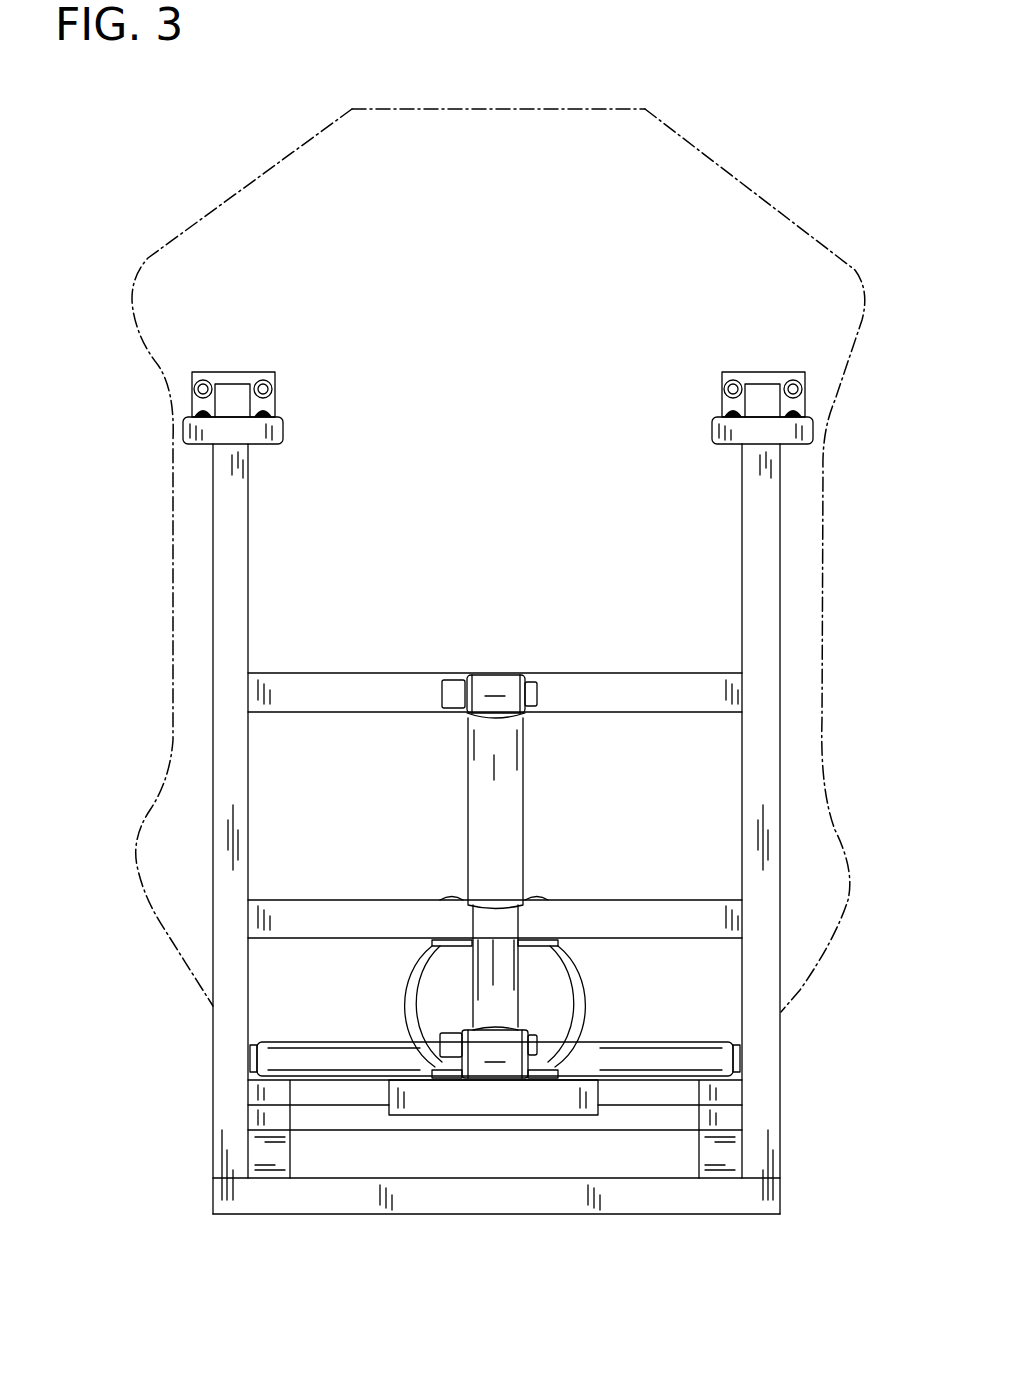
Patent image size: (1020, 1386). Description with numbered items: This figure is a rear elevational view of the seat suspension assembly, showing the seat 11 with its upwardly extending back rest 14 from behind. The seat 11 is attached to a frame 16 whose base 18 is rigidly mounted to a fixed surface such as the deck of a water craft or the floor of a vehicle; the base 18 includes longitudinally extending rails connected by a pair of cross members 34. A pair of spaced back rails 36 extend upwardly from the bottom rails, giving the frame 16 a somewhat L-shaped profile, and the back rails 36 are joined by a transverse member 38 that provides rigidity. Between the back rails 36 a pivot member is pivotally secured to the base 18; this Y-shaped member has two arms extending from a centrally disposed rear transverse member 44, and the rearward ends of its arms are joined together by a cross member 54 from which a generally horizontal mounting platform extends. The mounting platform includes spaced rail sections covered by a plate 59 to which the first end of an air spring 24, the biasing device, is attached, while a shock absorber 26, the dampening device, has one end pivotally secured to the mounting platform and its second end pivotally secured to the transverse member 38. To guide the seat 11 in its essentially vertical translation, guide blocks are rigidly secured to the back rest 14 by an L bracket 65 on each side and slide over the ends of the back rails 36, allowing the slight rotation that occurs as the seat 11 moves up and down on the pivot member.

The seat 11 is at (683, 172).
The back rest 14 is at (205, 245).
The frame 16 is at (506, 868).
The base 18 is at (700, 1196).
The air spring 24 is at (542, 1007).
The shock absorber 26 is at (510, 830).
The cross members 34 is at (300, 1196).
The back rails 36 is at (768, 568).
The transverse member 38 is at (285, 685).
The rear transverse member 44 is at (282, 1062).
The cross member 54 is at (500, 1103).
The plate 59 is at (707, 918).
The L bracket 65 is at (213, 370).